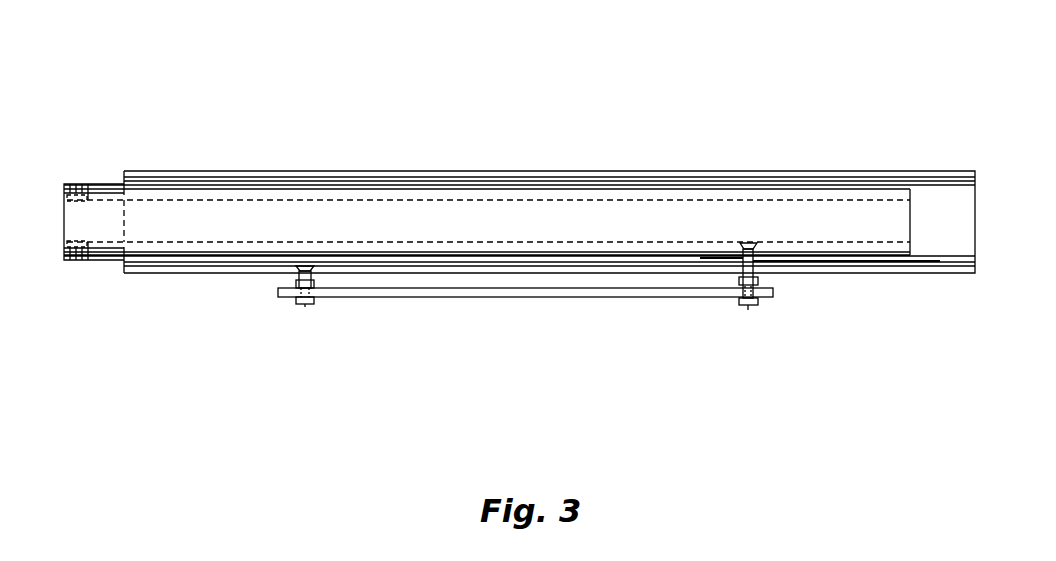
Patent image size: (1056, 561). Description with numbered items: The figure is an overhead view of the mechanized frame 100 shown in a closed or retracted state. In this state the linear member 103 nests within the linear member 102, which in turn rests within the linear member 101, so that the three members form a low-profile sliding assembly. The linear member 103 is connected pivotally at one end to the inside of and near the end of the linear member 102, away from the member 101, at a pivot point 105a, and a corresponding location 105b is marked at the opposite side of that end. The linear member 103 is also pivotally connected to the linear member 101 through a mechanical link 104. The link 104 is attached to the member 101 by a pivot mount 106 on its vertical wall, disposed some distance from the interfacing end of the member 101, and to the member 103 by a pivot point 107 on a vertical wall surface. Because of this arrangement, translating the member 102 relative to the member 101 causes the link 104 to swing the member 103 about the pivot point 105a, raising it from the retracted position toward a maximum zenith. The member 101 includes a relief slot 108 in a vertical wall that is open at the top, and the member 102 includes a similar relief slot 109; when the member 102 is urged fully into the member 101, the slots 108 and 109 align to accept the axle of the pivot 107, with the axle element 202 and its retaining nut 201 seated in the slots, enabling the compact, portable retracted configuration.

The mechanized frame 100 is at (512, 111).
The linear member 101 is at (894, 171).
The linear member 102 is at (97, 184).
The linear member 103 is at (366, 222).
The mechanical link 104 is at (565, 297).
The pivot point 105a is at (67, 240).
The upper end fitting 105b is at (67, 203).
The pivot mount 106 is at (305, 306).
The pivot point 107 is at (748, 307).
The relief slot 108 is at (740, 262).
The relief slot 109 is at (758, 258).
The nut 201 is at (758, 280).
The bolt head 202 is at (755, 243).